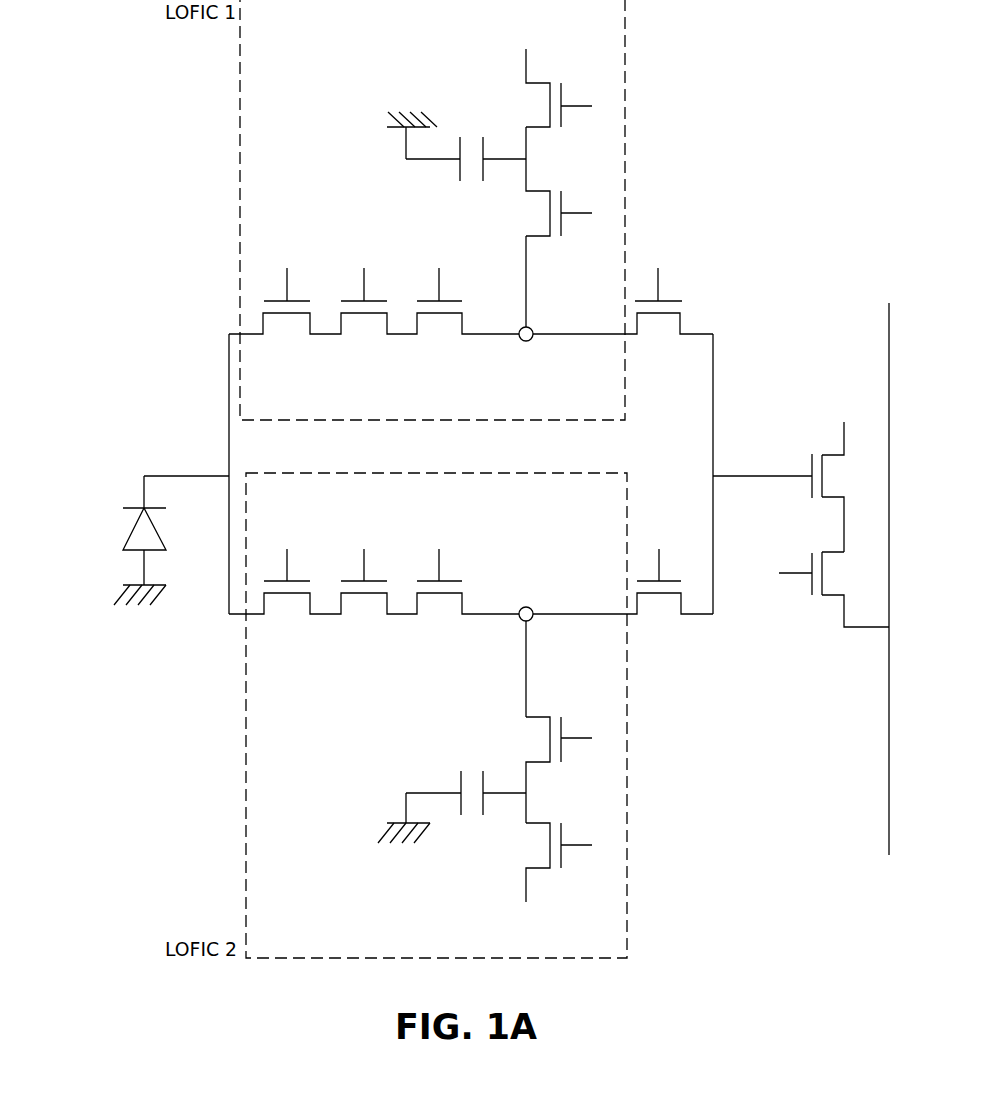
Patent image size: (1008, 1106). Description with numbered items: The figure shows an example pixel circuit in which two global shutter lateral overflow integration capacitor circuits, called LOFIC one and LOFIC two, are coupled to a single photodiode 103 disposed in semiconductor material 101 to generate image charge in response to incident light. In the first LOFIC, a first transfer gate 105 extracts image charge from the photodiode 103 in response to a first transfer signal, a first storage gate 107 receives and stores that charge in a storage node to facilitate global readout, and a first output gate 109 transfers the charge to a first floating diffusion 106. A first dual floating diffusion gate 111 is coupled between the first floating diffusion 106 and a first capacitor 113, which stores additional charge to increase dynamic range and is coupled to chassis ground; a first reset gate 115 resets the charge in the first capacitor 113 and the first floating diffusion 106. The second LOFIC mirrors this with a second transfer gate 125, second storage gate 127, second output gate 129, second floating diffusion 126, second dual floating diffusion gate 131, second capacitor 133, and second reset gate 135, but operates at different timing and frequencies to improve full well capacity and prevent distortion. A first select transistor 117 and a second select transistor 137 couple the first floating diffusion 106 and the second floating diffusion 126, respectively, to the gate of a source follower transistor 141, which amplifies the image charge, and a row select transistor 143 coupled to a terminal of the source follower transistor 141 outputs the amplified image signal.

The semiconductor material 101 is at (167, 363).
The photodiode 103 is at (94, 543).
The first transfer gate 105 is at (303, 251).
The first floating diffusion 106 is at (553, 371).
The first storage gate 107 is at (377, 251).
The first output gate 109 is at (455, 251).
The first dual floating diffusion gate 111 is at (582, 296).
The first capacitor 113 is at (487, 118).
The first reset gate 115 is at (588, 68).
The first select transistor 117 is at (735, 302).
The second transfer gate 125 is at (305, 538).
The second floating diffusion 126 is at (560, 598).
The second storage gate 127 is at (378, 538).
The second output gate 129 is at (457, 538).
The second dual floating diffusion gate 131 is at (597, 698).
The second capacitor 133 is at (489, 753).
The second reset gate 135 is at (588, 935).
The second select transistor 137 is at (693, 686).
The source follower transistor 141 is at (829, 430).
The row select transistor 143 is at (836, 651).